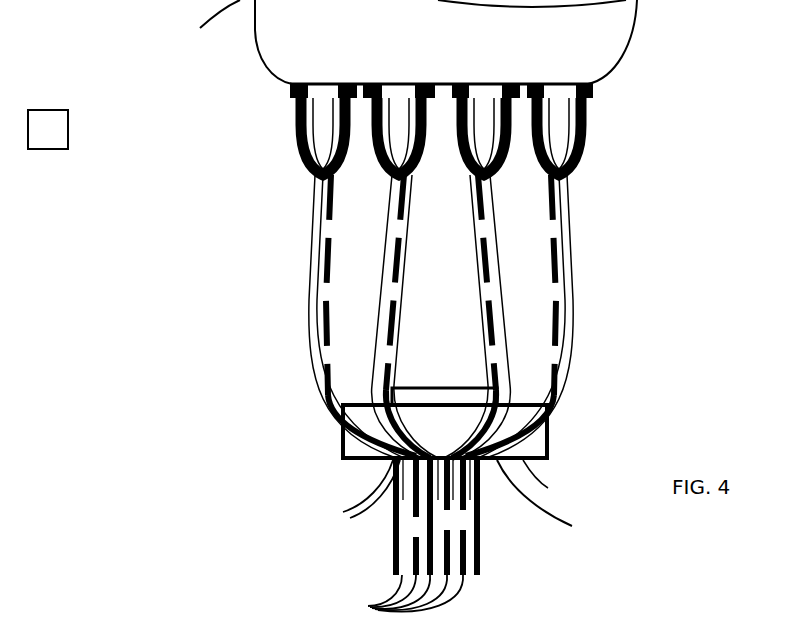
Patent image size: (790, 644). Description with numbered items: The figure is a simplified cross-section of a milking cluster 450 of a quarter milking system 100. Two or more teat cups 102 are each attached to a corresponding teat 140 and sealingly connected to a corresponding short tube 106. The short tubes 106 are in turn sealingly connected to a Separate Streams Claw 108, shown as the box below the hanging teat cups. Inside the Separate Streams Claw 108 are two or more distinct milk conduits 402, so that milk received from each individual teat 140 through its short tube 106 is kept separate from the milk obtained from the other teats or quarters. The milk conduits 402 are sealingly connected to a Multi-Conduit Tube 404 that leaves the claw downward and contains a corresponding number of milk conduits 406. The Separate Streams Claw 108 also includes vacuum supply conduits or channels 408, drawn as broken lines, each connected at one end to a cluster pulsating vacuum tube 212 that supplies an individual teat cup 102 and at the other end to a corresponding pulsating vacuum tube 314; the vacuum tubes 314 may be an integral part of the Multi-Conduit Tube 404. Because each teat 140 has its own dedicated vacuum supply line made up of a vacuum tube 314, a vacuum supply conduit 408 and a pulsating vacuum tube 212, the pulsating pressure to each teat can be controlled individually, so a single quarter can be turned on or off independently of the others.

The quarter milking system 100 is at (205, 107).
The teat cup 102 is at (76, 129).
The short tube 106 is at (308, 298).
The Separate Streams Claw (SSC) 108 is at (542, 316).
The teat 140 is at (563, 120).
The pulsating vacuum tube 212 is at (491, 294).
The pulsating vacuum tube 314 is at (396, 585).
The milk conduit 402 is at (585, 434).
The Multi-Conduit Tube (MCT) 404 is at (490, 460).
The milk conduit 406 is at (400, 526).
The vacuum supply conduit 408 is at (358, 460).
The cluster 450 is at (640, 465).